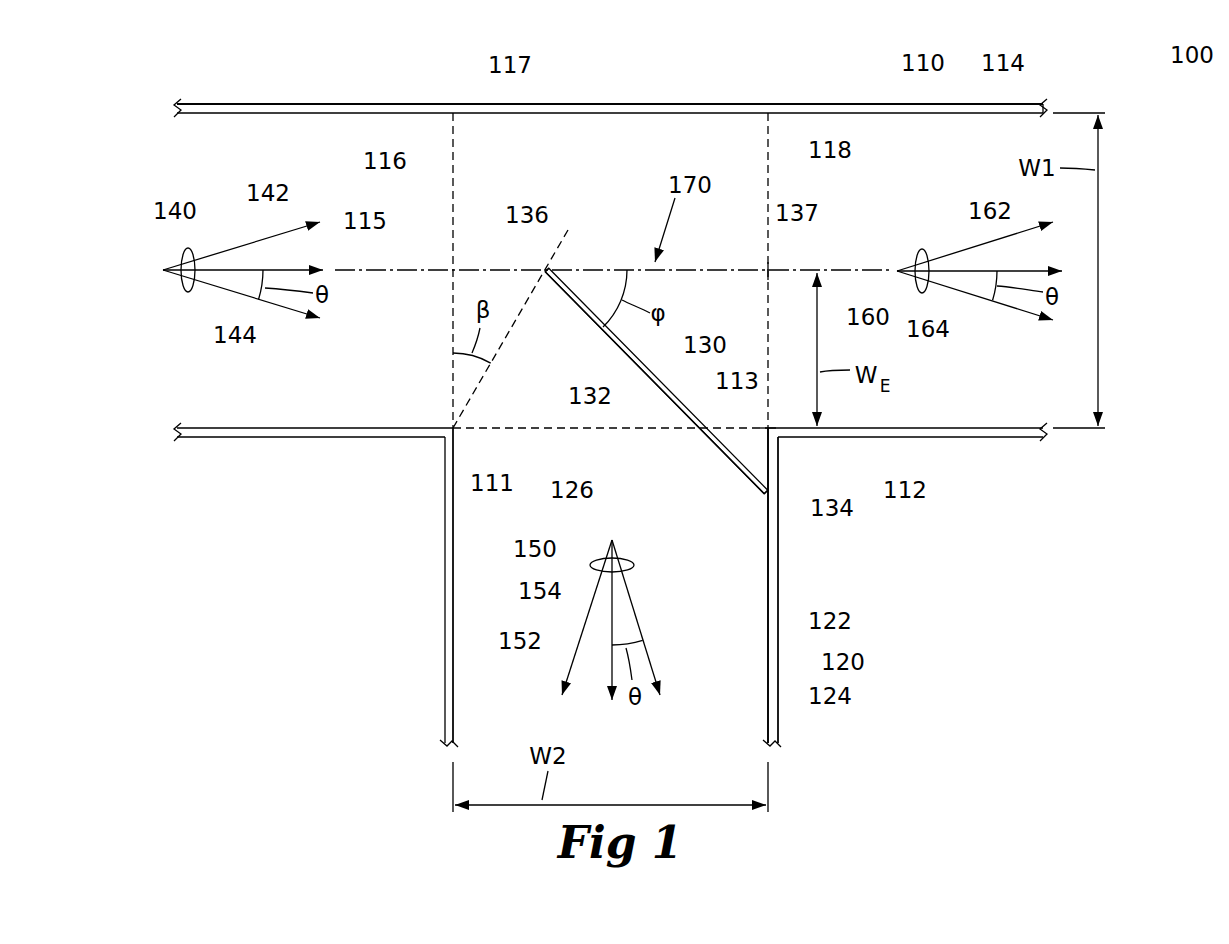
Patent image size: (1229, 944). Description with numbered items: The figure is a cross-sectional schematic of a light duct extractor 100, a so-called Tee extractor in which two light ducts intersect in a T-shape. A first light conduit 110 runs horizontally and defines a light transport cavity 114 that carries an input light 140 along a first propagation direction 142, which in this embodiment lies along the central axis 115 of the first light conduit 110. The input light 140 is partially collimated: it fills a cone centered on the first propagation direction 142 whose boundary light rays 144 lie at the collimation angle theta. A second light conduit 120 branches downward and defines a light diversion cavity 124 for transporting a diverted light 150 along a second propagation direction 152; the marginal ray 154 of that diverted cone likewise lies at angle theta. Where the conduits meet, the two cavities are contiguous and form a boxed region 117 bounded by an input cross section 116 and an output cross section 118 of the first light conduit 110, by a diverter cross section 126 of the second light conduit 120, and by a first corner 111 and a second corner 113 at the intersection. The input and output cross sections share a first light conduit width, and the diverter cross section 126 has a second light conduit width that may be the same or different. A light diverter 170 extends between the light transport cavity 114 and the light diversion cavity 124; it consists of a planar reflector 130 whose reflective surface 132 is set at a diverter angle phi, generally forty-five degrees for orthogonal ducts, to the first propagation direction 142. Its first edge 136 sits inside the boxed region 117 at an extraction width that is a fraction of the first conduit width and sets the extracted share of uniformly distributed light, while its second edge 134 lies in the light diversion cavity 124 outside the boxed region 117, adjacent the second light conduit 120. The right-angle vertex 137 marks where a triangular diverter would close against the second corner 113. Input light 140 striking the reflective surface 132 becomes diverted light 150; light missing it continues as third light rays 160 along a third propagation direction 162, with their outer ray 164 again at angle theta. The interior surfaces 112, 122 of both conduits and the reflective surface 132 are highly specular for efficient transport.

The light duct extractor 100 is at (1106, 90).
The first light conduit 110 is at (920, 110).
The first corner 111 is at (455, 427).
The interior surface 112 is at (908, 450).
The second corner 113 is at (765, 428).
The light transport cavity 114 is at (983, 133).
The central axis 115 is at (355, 268).
The input cross section 116 is at (452, 168).
The boxed region 117 is at (500, 128).
The output cross section 118 is at (768, 155).
The second light conduit 120 is at (775, 672).
The interior surface 122 is at (760, 646).
The light diversion cavity 124 is at (740, 710).
The diverter cross section 126 is at (578, 428).
The reflector 130 is at (648, 370).
The reflective surface 132 is at (618, 345).
The second edge 134 is at (768, 491).
The first edge 136 is at (547, 268).
The right-angle vertex 137 is at (770, 268).
The input light 140 is at (186, 248).
The first propagation direction 142 is at (283, 268).
The boundary light rays 144 is at (241, 295).
The diverted light 150 is at (594, 566).
The second propagation direction 152 is at (610, 660).
The branch marginal ray 154 is at (589, 616).
The third light rays 160 is at (920, 290).
The third propagation direction 162 is at (1017, 271).
The transmitted lower marginal ray 164 is at (972, 293).
The light diverter 170 is at (665, 230).